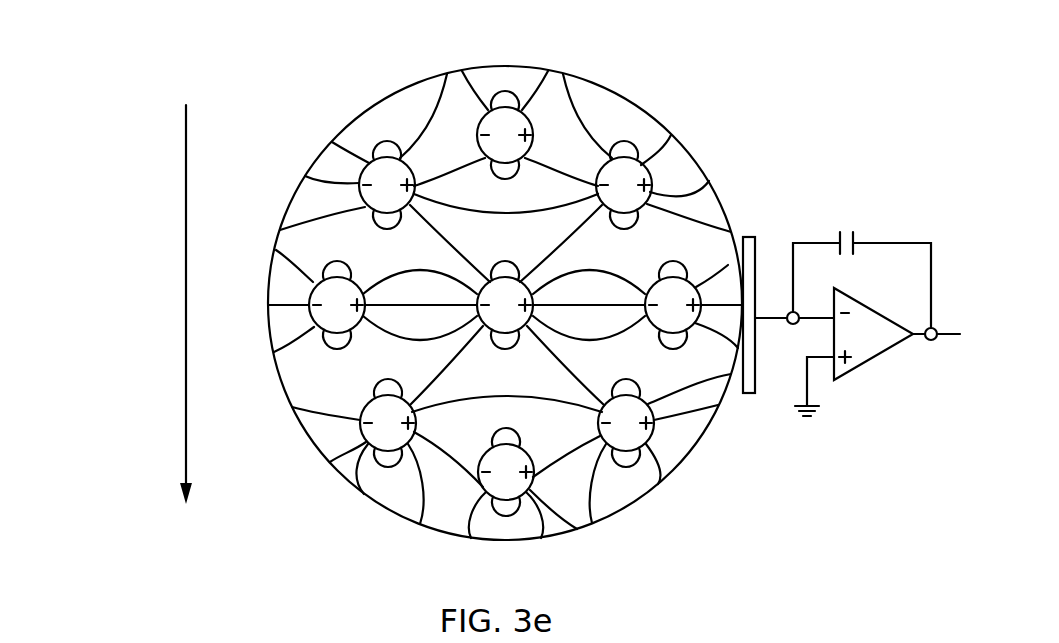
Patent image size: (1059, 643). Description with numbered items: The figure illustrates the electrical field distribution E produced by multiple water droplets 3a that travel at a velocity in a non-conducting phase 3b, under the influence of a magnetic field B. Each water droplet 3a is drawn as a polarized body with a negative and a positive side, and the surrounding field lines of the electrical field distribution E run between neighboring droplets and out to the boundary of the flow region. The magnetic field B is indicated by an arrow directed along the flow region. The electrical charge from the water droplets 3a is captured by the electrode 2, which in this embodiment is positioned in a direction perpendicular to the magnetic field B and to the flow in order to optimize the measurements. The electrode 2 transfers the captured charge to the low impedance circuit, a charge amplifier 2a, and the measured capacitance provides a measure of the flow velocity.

The electrode 2 is at (755, 397).
The charge amplifier 2a is at (857, 324).
The water droplets 3a is at (628, 133).
The non-conducting phase 3b is at (388, 492).
The electrical field distribution E is at (368, 163).
The magnetic field B is at (146, 302).